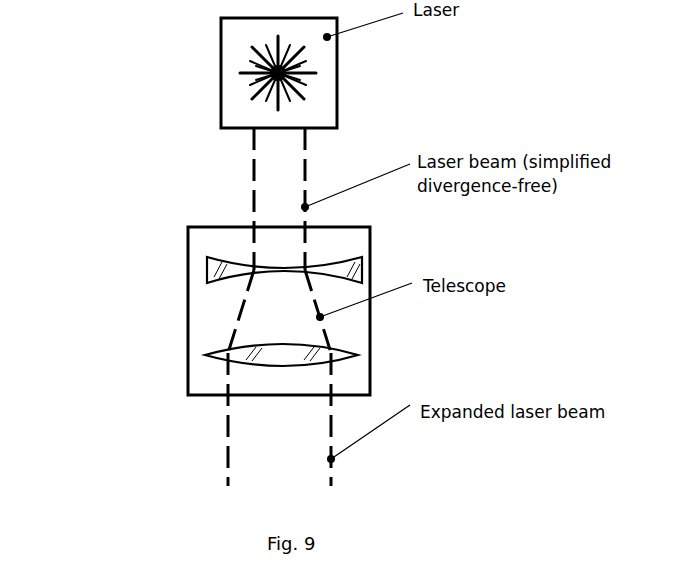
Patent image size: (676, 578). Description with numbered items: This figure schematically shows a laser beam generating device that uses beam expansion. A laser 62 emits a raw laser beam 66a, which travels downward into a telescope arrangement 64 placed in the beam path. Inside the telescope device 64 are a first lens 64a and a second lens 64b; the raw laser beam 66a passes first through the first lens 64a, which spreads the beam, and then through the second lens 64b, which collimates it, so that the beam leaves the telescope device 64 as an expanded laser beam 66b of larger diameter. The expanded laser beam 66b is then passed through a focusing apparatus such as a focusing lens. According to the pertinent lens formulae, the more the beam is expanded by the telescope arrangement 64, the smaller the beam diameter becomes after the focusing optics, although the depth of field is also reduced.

The laser 62 is at (217, 110).
The raw laser beam 66a is at (252, 192).
The telescope arrangement 64 is at (188, 388).
The first lens 64a is at (207, 262).
The second lens 64b is at (207, 353).
The expanded laser beam 66b is at (222, 469).